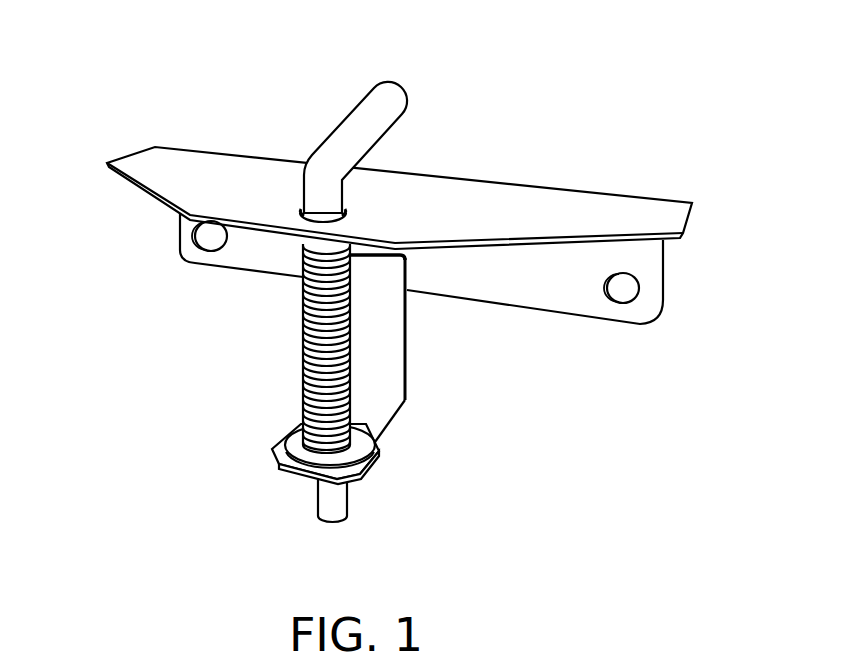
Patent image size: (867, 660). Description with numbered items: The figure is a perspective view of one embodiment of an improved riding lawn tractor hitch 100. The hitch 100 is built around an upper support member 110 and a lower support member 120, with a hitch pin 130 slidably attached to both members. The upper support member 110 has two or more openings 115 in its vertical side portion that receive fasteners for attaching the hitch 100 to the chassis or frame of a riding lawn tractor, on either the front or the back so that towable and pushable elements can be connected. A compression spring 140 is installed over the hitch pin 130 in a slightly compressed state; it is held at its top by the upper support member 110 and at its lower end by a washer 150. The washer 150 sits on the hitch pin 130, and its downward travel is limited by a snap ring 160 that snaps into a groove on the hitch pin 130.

The lawn tractor hitch 100 is at (370, 283).
The upper support member 110 is at (370, 247).
The openings 115 is at (200, 250).
The lower support member 120 is at (398, 425).
The hitch pin 130 is at (348, 132).
The compression spring 140 is at (303, 373).
The washer 150 is at (293, 437).
The snap ring 160 is at (363, 482).